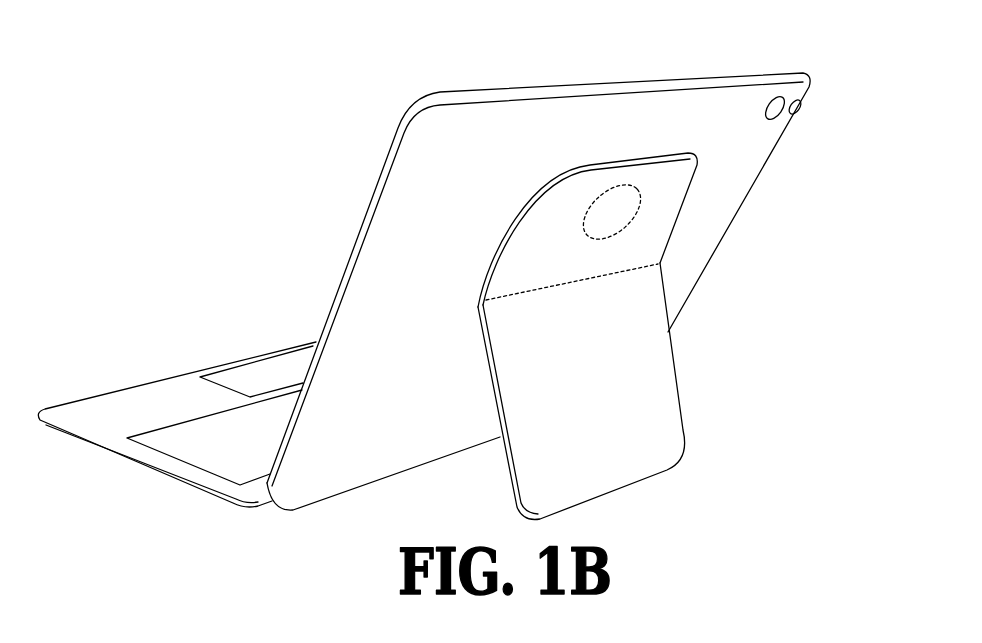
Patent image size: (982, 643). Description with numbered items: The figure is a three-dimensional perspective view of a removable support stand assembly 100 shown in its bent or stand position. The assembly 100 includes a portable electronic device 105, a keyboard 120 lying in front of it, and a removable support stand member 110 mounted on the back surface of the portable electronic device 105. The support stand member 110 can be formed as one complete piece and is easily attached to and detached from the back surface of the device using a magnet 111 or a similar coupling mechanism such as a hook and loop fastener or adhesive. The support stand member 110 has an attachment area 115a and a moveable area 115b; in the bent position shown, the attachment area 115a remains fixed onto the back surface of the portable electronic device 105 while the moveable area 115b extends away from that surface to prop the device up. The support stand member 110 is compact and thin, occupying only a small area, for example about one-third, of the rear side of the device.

The removable support stand assembly 100 is at (424, 281).
The portable electronic device 105 is at (746, 80).
The removable support stand member 110 is at (556, 320).
The magnet 111 is at (634, 215).
The attachment area 115a is at (517, 258).
The moveable area 115b is at (512, 353).
The keyboard 120 is at (130, 388).